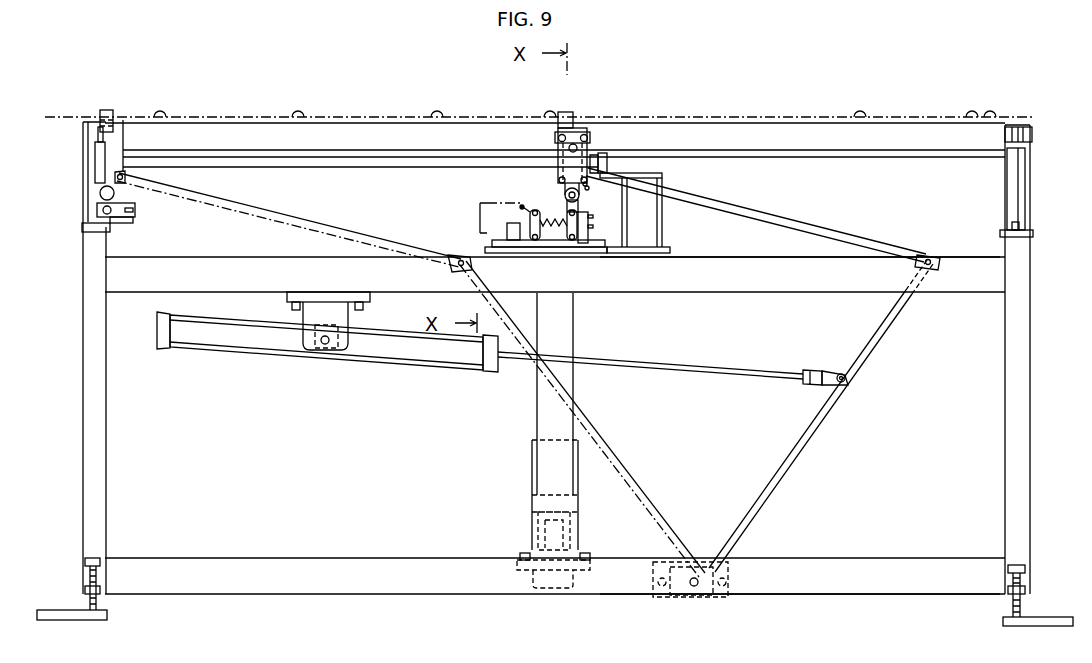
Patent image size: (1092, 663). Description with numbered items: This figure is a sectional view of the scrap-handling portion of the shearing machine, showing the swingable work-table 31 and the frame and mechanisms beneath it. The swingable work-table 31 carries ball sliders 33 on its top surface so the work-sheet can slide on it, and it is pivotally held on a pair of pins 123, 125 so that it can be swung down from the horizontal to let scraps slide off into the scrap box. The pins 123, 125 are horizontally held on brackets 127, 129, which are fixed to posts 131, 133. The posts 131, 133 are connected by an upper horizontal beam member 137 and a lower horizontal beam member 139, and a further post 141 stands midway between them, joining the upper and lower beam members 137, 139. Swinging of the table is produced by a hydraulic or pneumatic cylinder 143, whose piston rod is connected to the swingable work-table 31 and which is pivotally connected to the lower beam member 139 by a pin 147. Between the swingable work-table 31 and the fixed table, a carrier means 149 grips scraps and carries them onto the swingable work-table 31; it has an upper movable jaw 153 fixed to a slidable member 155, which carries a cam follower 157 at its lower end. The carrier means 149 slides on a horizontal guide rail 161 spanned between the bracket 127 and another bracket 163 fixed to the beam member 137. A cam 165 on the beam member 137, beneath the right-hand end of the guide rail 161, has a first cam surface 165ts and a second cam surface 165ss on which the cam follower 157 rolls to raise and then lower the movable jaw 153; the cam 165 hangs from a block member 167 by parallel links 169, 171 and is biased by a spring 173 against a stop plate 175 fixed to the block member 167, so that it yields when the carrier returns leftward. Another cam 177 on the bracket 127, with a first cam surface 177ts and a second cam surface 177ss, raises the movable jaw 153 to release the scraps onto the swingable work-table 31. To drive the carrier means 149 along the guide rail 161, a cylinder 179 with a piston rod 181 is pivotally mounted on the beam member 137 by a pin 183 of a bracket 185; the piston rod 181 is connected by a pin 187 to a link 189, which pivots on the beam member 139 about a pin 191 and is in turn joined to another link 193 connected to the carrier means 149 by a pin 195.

The swingable work-table 31 is at (833, 125).
The ball sliders 33 is at (190, 117).
The pin 123 is at (90, 120).
The pin 125 is at (1025, 137).
The bracket 127 is at (85, 187).
The bracket 129 is at (1020, 178).
The post 131 is at (88, 305).
The post 133 is at (1027, 390).
The upper horizontal beam member 137 is at (757, 292).
The lower horizontal beam member 139 is at (773, 594).
The post 141 is at (538, 405).
The hydraulic or pneumatic motor or cylinder 143 is at (530, 450).
The pin 147 is at (527, 522).
The carrier means 149 is at (558, 140).
The upper movable jaw 153 is at (568, 110).
The slidable member 155 is at (592, 140).
The cam follower 157 is at (565, 197).
The guide rail 161 is at (368, 165).
The bracket 163 is at (607, 155).
The cam 165 is at (523, 227).
The first cam surface 165ts is at (538, 207).
The second cam surface 165ss is at (587, 190).
The block member 167 is at (547, 242).
The parallel link 169 is at (528, 240).
The parallel link 171 is at (582, 233).
The spring 173 is at (560, 228).
The stop plate 175 is at (635, 235).
The cam 177 is at (118, 217).
The first cam surface 177ts is at (92, 205).
The second cam surface 177ss is at (130, 200).
The hydraulic or pneumatic motor or cylinder 179 is at (383, 350).
The piston rod 181 is at (657, 373).
The pin 183 is at (325, 345).
The bracket 185 is at (303, 338).
The pin 187 is at (845, 382).
The link 189 is at (777, 477).
The pin 191 is at (688, 594).
The link 193 is at (770, 220).
The pin 195 is at (588, 185).